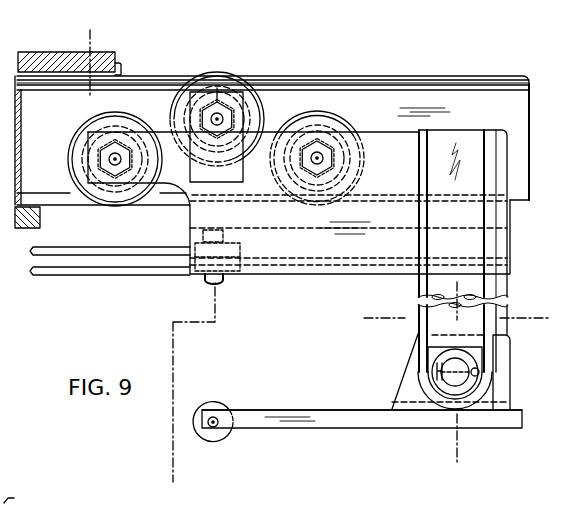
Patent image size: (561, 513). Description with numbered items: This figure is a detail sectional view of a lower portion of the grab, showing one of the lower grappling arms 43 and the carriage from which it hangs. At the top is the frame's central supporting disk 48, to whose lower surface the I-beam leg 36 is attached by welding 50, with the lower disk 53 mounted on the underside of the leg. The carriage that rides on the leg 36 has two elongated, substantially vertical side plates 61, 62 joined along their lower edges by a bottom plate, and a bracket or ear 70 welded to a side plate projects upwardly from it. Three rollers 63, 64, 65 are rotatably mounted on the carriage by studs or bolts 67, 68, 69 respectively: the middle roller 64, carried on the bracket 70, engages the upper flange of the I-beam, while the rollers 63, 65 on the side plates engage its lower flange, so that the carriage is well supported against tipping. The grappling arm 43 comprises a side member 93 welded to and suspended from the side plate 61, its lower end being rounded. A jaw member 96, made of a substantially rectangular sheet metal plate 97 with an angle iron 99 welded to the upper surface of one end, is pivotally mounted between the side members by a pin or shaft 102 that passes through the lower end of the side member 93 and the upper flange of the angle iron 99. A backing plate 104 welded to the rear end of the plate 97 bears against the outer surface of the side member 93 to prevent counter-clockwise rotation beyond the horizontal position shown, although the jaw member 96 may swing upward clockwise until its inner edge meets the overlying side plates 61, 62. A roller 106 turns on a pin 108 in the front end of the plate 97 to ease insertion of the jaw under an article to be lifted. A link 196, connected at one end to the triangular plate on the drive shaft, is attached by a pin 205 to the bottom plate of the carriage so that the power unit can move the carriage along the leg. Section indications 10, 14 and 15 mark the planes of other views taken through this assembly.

The section line 10- 10 is at (84, 36).
The section line 14- 14 is at (462, 285).
The section line 15- 15 is at (364, 297).
The leg 36 is at (470, 69).
The grappling arm 43 is at (505, 243).
The central supporting plate or disk 48 is at (101, 54).
The welding 50 is at (121, 71).
The lower disk 53 is at (41, 221).
The side plate 61 is at (337, 253).
The side plate 62 is at (20, 501).
The roller 63 is at (94, 126).
The roller 64 is at (228, 87).
The roller 65 is at (347, 116).
The stud or bolt 67 is at (109, 160).
The stud or bolt 68 is at (206, 115).
The stud or bolt 69 is at (327, 162).
The bracket or ear 70 is at (234, 105).
The side member 93 is at (418, 326).
The jaw member 96 is at (367, 436).
The substantially rectangular-shaped plate 97 is at (326, 418).
The angle iron 99 is at (412, 382).
The pin or shaft 102 is at (457, 384).
The backing plate 104 is at (504, 372).
The roller 106 is at (215, 408).
The pin 108 is at (220, 428).
The link 196 is at (109, 274).
The pin 205 is at (222, 282).